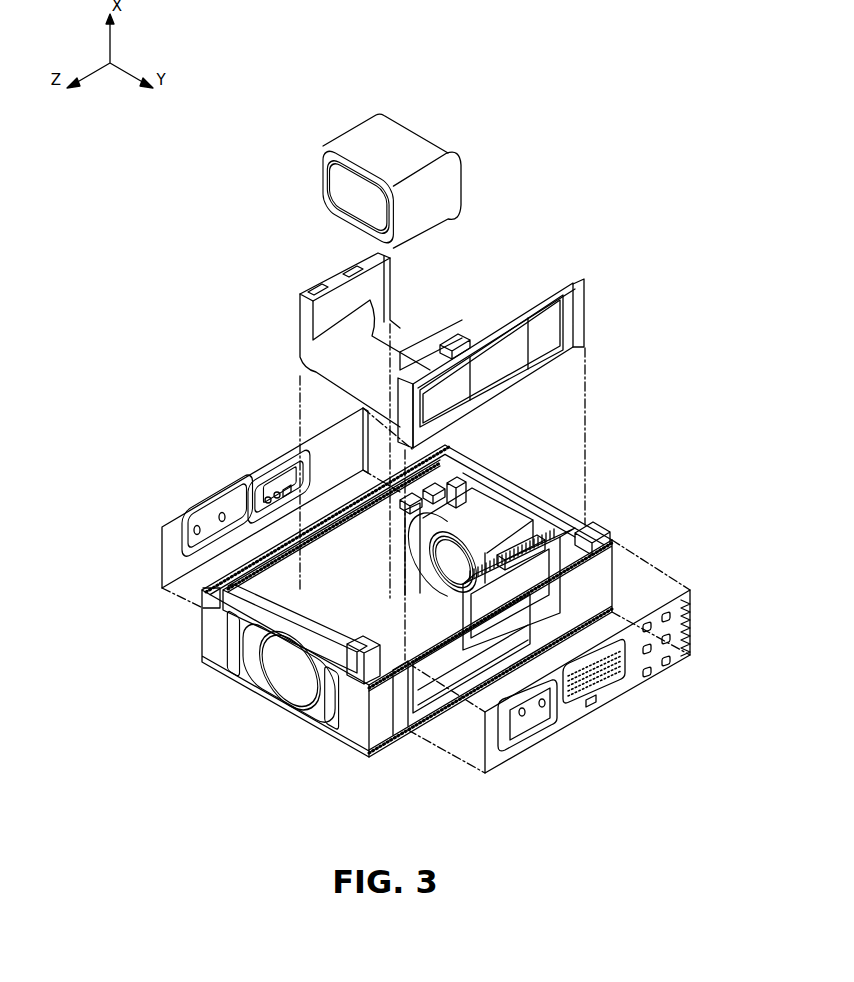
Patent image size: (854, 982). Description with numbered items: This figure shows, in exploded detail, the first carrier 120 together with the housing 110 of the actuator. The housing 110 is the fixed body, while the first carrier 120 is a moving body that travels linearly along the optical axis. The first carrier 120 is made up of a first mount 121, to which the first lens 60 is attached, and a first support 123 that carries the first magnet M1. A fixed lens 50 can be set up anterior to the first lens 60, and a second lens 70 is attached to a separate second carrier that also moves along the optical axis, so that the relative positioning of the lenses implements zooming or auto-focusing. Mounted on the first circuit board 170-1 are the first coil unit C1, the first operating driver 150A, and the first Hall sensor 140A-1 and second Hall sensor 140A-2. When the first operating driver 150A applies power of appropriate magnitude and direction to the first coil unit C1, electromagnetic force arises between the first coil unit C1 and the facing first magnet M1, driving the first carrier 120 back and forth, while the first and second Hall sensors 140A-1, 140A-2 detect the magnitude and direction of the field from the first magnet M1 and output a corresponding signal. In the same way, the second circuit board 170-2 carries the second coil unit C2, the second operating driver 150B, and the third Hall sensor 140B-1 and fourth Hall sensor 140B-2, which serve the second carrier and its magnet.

The first lens 60 is at (407, 141).
The first carrier 120 is at (373, 336).
The first mount 121 is at (333, 285).
The first support 123 is at (491, 346).
The first magnet M1 is at (501, 374).
The housing 110 is at (362, 601).
The fixed lens 50 is at (298, 670).
The second lens 70 is at (495, 533).
The first circuit board 170-1 is at (601, 712).
The second circuit board 170-2 is at (214, 498).
The first Hall sensor 140A-1 is at (523, 715).
The second Hall sensor 140A-2 is at (543, 703).
The third Hall sensor 140B-1 is at (197, 530).
The fourth Hall sensor 140B-2 is at (220, 517).
The first operating driver 150A is at (617, 668).
The second operating driver 150B is at (281, 483).
The first coil unit C1 is at (590, 697).
The second coil unit C2 is at (253, 470).